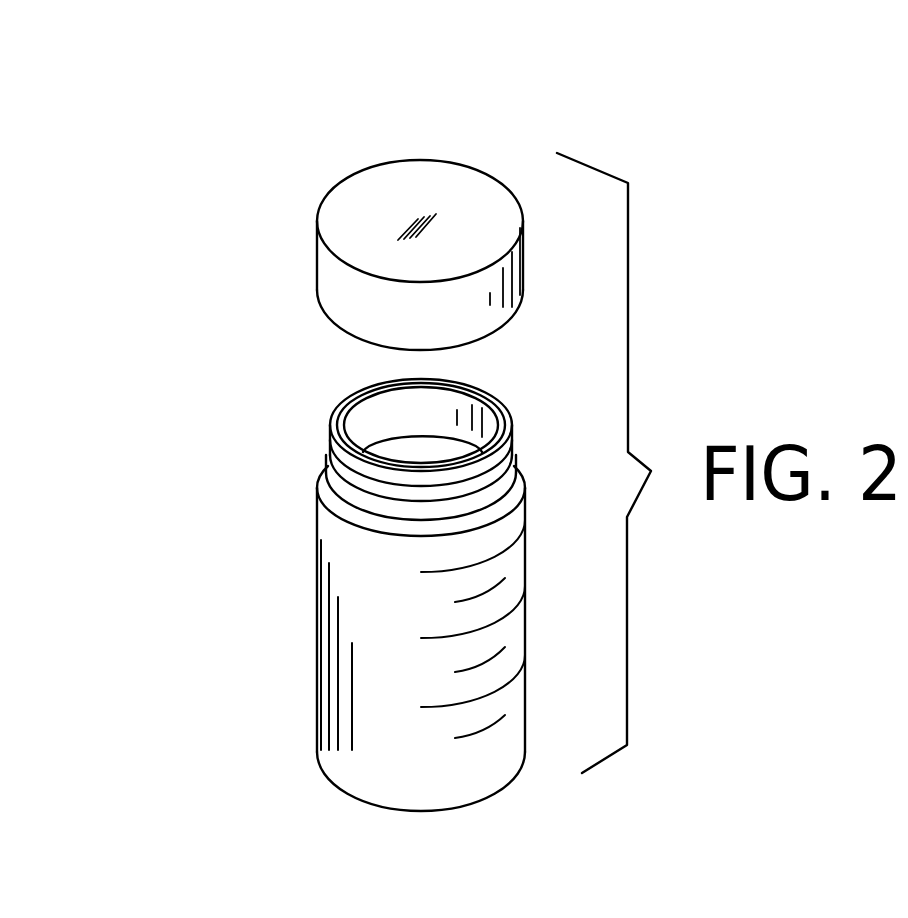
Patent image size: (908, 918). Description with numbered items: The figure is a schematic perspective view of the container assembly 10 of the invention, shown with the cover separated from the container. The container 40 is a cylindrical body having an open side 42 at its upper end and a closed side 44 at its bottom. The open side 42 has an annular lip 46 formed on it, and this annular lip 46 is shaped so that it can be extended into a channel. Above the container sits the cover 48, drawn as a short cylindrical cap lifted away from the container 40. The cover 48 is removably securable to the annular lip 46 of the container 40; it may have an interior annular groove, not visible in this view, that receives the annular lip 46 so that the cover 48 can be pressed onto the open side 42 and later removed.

The container assembly 10 is at (290, 107).
The container 40 is at (285, 783).
The open side 42 is at (348, 500).
The closed side 44 is at (433, 810).
The annular lip 46 is at (340, 417).
The cover 48 is at (338, 213).